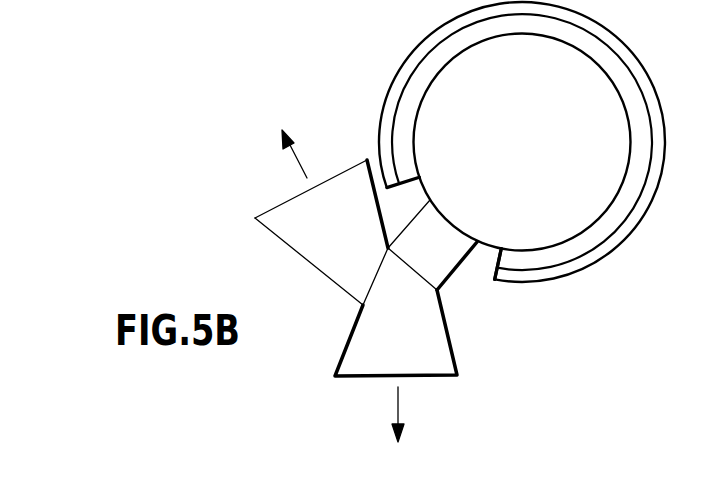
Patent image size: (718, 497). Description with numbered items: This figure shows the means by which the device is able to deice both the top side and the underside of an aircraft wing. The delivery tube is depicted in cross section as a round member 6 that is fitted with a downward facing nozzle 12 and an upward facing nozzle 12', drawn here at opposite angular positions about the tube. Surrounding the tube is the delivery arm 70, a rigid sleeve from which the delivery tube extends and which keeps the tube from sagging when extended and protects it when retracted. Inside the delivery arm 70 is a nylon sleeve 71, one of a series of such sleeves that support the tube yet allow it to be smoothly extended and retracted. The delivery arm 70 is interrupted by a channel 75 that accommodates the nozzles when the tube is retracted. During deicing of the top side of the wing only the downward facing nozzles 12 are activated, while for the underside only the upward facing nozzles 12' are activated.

The hub / central member 6 is at (530, 176).
The downward facing nozzle 12 is at (425, 321).
The upward facing nozzle 12' is at (309, 217).
The delivery arm 70 is at (422, 48).
The nylon sleeve 71 is at (622, 203).
The channel 75 is at (487, 252).